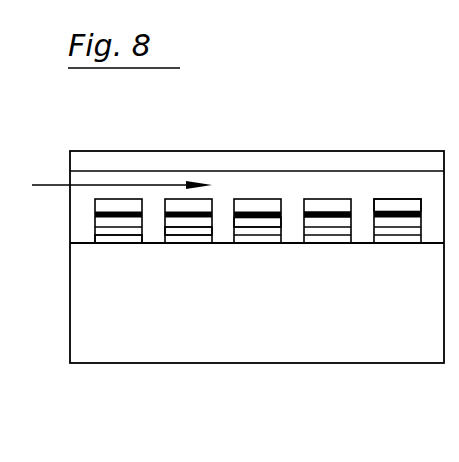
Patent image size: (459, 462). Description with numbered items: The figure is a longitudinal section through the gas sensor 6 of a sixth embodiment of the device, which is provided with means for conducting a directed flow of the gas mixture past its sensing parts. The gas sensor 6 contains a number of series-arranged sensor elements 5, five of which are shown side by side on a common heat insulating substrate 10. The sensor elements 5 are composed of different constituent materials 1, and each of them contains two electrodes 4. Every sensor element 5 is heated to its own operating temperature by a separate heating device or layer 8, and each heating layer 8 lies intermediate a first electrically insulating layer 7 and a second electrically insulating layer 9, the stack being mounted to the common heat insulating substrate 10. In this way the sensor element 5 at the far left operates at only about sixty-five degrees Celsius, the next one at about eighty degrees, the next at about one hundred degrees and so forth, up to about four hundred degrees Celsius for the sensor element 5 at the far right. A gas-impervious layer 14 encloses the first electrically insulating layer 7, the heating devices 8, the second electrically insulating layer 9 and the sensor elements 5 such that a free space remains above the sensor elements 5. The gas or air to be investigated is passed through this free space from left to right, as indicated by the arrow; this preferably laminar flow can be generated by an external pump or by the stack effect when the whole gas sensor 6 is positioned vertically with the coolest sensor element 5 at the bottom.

The constituent material 1 is at (385, 202).
The electrode 4 is at (315, 217).
The sensor element 5 is at (89, 228).
The gas sensor 6 is at (270, 460).
The first electrically insulating layer 7 is at (250, 222).
The heating device or layer 8 is at (182, 230).
The second electrically insulating layer 9 is at (118, 238).
The heat insulating substrate 10 is at (412, 303).
The gas-impervious layer 14 is at (192, 162).